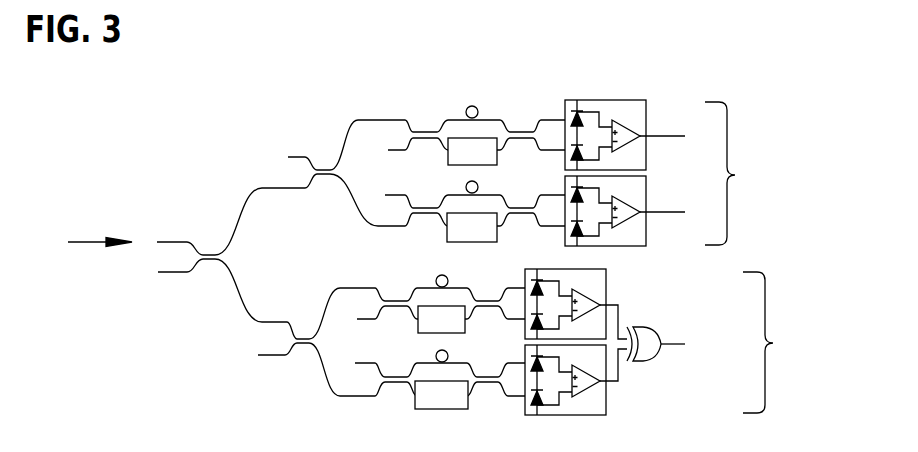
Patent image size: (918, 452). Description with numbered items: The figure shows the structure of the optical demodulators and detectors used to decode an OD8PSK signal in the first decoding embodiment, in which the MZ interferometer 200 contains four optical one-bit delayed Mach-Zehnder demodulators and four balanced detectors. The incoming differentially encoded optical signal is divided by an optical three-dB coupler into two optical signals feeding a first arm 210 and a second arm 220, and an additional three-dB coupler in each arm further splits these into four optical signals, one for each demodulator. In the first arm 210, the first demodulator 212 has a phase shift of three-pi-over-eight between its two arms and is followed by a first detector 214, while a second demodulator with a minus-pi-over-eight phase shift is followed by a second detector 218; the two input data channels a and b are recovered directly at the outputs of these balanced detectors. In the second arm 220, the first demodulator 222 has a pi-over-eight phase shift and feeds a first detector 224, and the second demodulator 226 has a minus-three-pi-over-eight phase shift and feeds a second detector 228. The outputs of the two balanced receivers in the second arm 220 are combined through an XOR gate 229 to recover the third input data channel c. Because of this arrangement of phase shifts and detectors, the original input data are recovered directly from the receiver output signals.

The MZ interferometer 200 is at (198, 115).
The first arm 210 is at (735, 175).
The first demodulator, first arm 212 is at (443, 120).
The first detector, first arm 214 is at (630, 100).
The second detector, first arm 218 is at (637, 240).
The second arm 220 is at (773, 343).
The first demodulator, second arm 222 is at (463, 291).
The first detector, second arm 224 is at (597, 280).
The second demodulator, second arm 226 is at (433, 411).
The second detector, second arm 228 is at (593, 405).
The XOR gate 229 is at (650, 350).